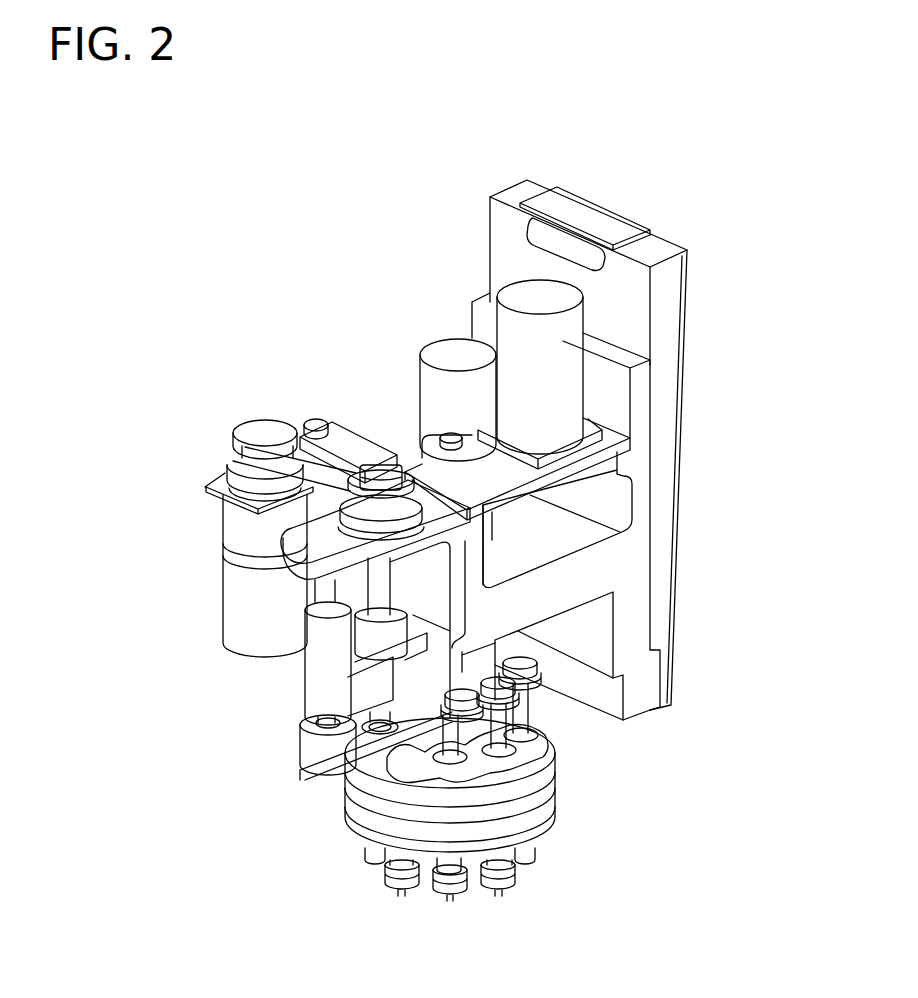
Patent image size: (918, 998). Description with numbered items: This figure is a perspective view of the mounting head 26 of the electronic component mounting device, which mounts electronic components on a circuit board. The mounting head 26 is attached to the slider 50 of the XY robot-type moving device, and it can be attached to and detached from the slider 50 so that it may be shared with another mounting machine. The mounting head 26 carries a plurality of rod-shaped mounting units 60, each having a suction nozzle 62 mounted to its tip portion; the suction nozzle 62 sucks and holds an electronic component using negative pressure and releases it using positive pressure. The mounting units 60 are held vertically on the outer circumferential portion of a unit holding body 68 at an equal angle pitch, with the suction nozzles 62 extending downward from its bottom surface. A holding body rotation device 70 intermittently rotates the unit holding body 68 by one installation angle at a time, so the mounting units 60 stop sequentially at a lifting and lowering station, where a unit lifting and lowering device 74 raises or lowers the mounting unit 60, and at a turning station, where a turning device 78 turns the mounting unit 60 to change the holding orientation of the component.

The mounting head 26 is at (539, 126).
The slider 50 is at (673, 308).
The turning device 78 is at (407, 320).
The holding body rotation device 70 is at (160, 493).
The unit lifting and lowering device 74 is at (250, 711).
The unit holding body 68 is at (347, 812).
The mounting unit 60 is at (465, 760).
The suction nozzle 62 is at (367, 855).